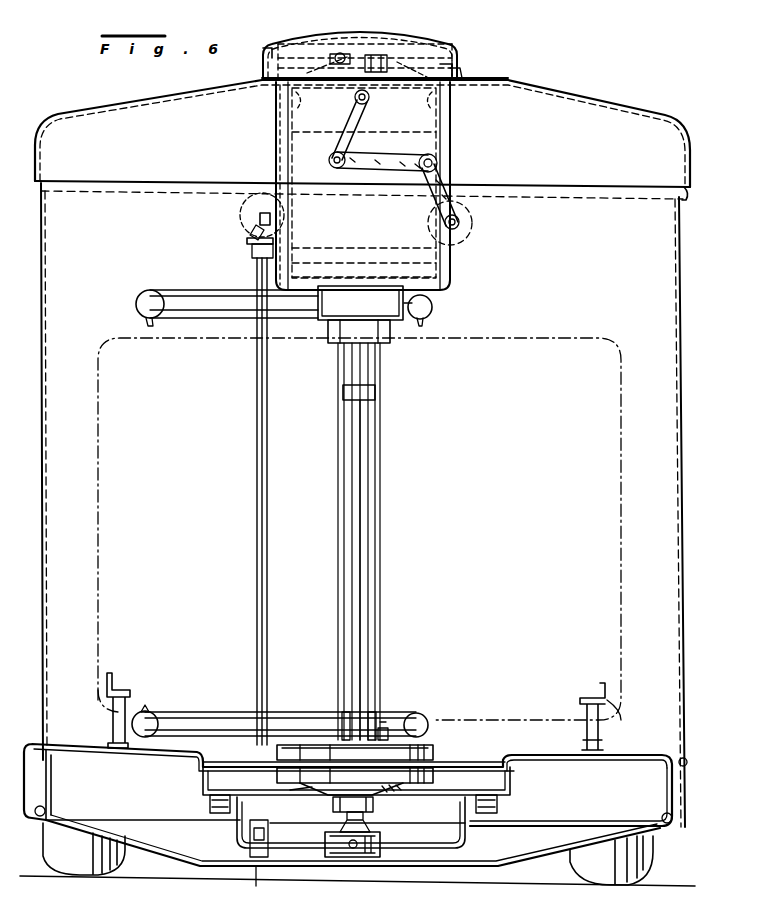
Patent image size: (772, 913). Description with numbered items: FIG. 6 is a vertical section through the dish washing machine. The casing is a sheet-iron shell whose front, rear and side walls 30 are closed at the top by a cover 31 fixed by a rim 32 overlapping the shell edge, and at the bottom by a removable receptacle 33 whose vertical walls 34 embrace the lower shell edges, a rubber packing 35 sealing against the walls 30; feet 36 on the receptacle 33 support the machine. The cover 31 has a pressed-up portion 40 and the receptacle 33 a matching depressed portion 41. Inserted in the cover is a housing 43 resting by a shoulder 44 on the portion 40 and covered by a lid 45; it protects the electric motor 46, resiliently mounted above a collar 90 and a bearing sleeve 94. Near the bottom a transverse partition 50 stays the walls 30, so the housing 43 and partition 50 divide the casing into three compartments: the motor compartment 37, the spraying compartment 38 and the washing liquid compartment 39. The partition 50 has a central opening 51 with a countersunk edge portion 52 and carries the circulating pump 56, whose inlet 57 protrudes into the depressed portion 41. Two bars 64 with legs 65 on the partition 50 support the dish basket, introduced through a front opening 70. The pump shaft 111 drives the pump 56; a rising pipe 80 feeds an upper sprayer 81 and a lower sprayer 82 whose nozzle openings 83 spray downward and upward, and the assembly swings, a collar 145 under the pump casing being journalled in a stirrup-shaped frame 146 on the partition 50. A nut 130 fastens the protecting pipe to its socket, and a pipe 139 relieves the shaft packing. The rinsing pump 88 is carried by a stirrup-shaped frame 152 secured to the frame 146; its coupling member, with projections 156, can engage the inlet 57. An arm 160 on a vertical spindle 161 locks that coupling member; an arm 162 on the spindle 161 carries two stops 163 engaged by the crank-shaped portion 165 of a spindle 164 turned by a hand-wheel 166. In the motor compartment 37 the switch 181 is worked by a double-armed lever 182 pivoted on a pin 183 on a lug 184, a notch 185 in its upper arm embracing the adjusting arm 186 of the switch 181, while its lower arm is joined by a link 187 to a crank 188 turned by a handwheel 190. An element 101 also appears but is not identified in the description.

The shell walls 30 is at (45, 438).
The cover 31 is at (686, 159).
The rim 32 is at (688, 200).
The receptacle 33 is at (548, 868).
The vertical walls 34 is at (672, 786).
The packing 35 is at (676, 700).
The feet 36 is at (126, 864).
The motor compartment 37 is at (329, 195).
The spraying compartment 38 is at (644, 525).
The washing liquid compartment 39 is at (321, 785).
The pressed-up portion 40 is at (492, 80).
The depressed portion 41 is at (480, 876).
The housing 43 is at (451, 117).
The shoulder 44 is at (462, 74).
The lid 45 is at (412, 42).
The electric motor 46 is at (288, 146).
The transverse partition 50 is at (640, 756).
The central opening 51 is at (462, 771).
The countersunk edge portion 52 is at (470, 765).
The pump 56 is at (433, 750).
The inlet 57 is at (334, 806).
The bars 64 is at (592, 698).
The legs 65 is at (600, 722).
The opening 70 is at (620, 416).
The rising pipe 80 is at (381, 530).
The upper sprayer 81 is at (178, 290).
The lower sprayer 82 is at (192, 710).
The nozzle-like openings 83 is at (421, 326).
The rinsing pump 88 is at (381, 842).
The collar 90 is at (433, 302).
The bearing sleeve 94 is at (348, 328).
The cover clip 101 is at (262, 50).
The pump shaft 111 is at (381, 464).
The nut 130 is at (392, 718).
The pipe 139 is at (345, 712).
The collar 145 is at (310, 790).
The stirrup-shaped frame 146 is at (510, 782).
The stirrup-shaped frame 152 is at (466, 836).
The projections 156 is at (366, 818).
The arm 160 is at (308, 868).
The vertical spindle 161 is at (268, 540).
The arm 162 is at (248, 244).
The stops 163 is at (252, 232).
The spindle 164 is at (265, 213).
The crank-shaped portion 165 is at (256, 258).
The hand-wheel 166 is at (246, 206).
The switch 181 is at (345, 54).
The double-armed lever 182 is at (362, 116).
The pin 183 is at (355, 99).
The lug 184 is at (455, 66).
The notch 185 is at (398, 62).
The adjusting arm 186 is at (382, 52).
The link 187 is at (380, 170).
The crank 188 is at (445, 180).
The handwheel 190 is at (478, 214).